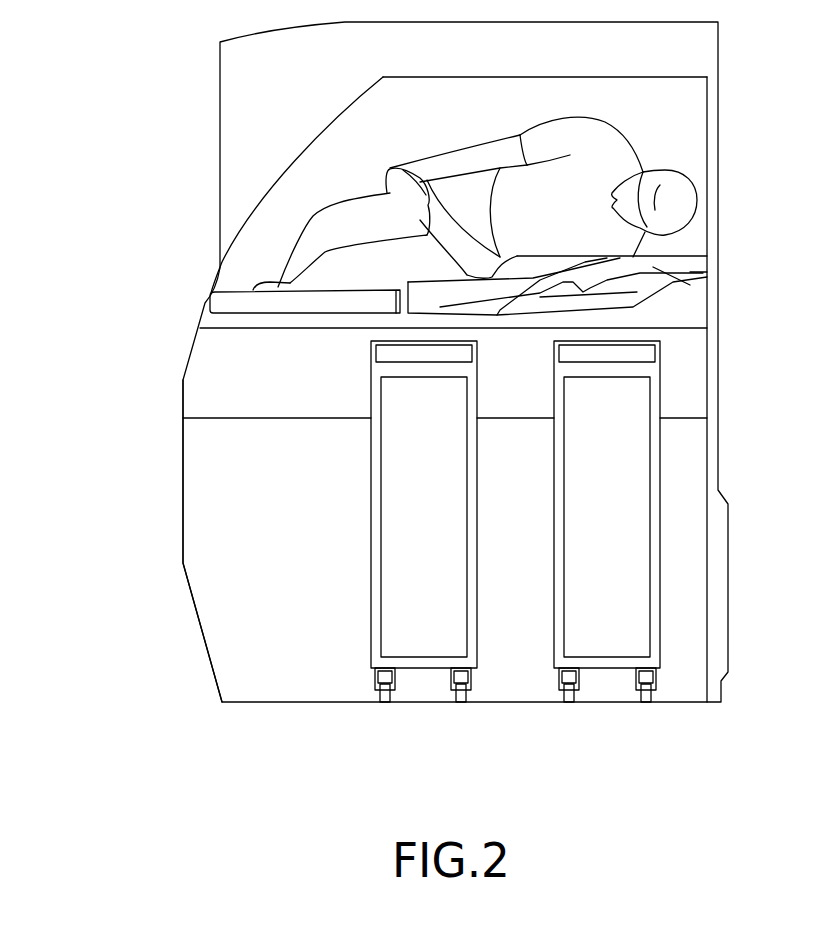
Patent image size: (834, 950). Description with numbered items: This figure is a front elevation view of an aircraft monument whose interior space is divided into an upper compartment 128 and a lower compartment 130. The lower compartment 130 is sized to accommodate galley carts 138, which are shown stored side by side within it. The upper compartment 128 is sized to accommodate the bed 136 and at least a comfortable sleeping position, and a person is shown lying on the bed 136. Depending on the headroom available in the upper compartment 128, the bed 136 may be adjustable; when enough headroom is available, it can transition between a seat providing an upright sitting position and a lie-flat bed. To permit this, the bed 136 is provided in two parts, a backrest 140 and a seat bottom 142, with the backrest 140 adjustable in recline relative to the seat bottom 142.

The upper compartment 128 is at (273, 201).
The lower compartment 130 is at (211, 477).
The bed 136 is at (697, 266).
The galley carts 138 is at (638, 494).
The backrest 140 is at (688, 285).
The seat bottom 142 is at (229, 305).